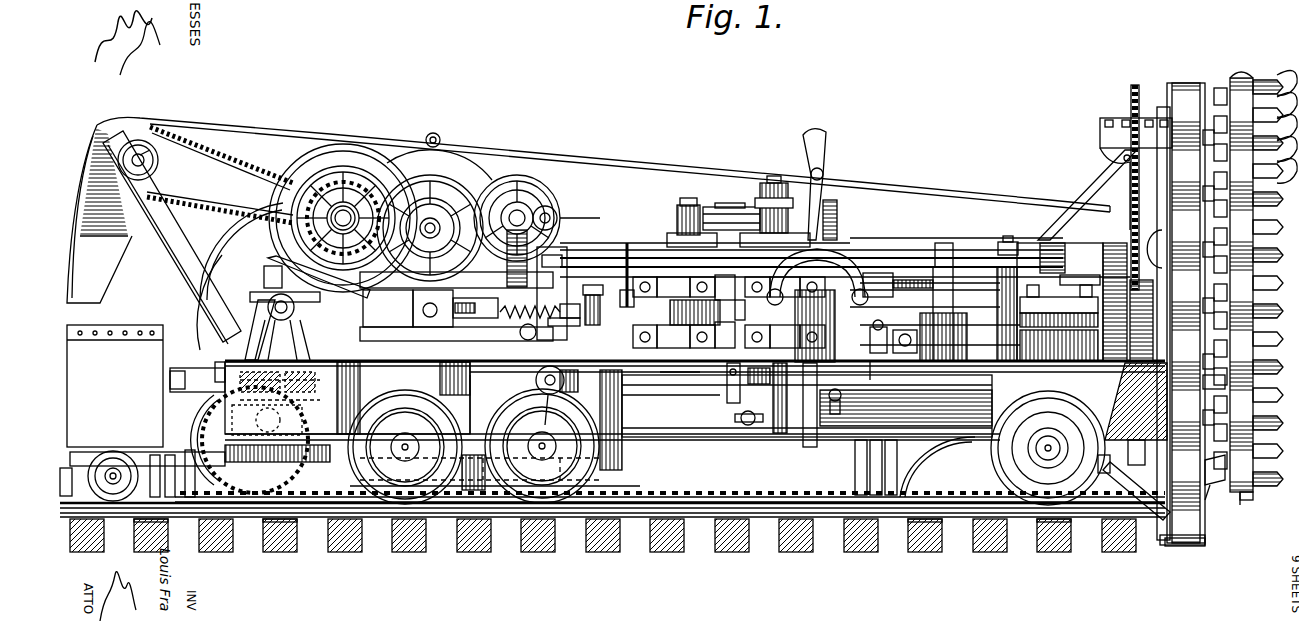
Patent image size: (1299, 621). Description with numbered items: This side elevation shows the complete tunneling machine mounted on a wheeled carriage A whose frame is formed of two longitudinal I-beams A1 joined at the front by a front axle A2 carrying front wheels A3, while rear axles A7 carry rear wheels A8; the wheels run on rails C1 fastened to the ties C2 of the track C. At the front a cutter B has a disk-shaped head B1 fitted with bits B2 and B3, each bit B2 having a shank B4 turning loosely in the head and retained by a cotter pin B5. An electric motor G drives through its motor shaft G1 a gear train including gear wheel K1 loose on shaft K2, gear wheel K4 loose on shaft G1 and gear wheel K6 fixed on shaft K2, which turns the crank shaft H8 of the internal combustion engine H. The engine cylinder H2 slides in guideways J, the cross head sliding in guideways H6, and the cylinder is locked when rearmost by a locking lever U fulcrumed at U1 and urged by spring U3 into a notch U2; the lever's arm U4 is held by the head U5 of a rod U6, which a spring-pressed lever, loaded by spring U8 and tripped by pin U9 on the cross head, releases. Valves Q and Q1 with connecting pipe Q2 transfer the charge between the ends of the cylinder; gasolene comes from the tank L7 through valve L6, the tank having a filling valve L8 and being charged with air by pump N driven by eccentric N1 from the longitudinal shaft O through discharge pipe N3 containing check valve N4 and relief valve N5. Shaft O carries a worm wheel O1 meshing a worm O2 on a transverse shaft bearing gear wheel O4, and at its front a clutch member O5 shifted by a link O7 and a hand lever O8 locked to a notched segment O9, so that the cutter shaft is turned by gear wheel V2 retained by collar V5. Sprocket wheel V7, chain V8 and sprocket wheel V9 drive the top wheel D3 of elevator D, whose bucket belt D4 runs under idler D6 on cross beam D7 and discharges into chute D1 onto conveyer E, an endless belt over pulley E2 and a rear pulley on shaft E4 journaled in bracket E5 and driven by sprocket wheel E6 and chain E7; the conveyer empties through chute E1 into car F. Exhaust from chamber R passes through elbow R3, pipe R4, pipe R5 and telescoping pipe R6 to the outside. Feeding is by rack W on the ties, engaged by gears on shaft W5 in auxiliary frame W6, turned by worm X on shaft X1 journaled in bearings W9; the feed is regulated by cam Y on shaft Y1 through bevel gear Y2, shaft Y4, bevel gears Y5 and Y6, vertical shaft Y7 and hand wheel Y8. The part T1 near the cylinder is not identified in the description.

The chute E1 is at (99, 214).
The bracket E5 is at (200, 240).
The conveyer E is at (603, 164).
The sprocket chain E7 is at (268, 170).
The sprocket wheel E6 is at (160, 160).
The shaft E4 is at (151, 145).
The pulley E2 is at (1160, 230).
The gear wheel K1 is at (343, 144).
The shaft K2 is at (343, 218).
The gear wheel K6 is at (343, 208).
The gear wheel K4 is at (428, 145).
The motor G is at (455, 152).
The motor shaft G1 is at (437, 230).
The worm O2 is at (540, 208).
The gear wheel O4 is at (560, 214).
The clutch member O5 is at (520, 200).
The worm wheel O1 is at (555, 270).
The shaft O is at (972, 248).
The link O7 is at (912, 270).
The hand lever O8 is at (825, 150).
The notched segment O9 is at (840, 268).
The crank shaft H8 is at (272, 300).
The internal combustion engine H is at (731, 207).
The cylinder H2 is at (668, 243).
The guideways H6 is at (456, 313).
The worm X is at (263, 330).
The shaft X1 is at (200, 379).
The locking lever U is at (680, 388).
The fulcrum U1 is at (1060, 302).
The notch U2 is at (527, 329).
The spring U3 is at (550, 325).
The arm U4 is at (729, 300).
The head U5 is at (729, 335).
The rod U6 is at (594, 305).
The spring U8 is at (747, 323).
The pin U9 is at (455, 307).
The wheeled carriage A is at (695, 418).
The I-beams A1 is at (210, 400).
The front axle A2 is at (1048, 455).
The front wheels A3 is at (1060, 410).
The rear axles A7 is at (405, 447).
The rear wheels A8 is at (495, 486).
The rack W is at (215, 470).
The shaft W5 is at (280, 420).
The auxiliary frame W6 is at (277, 460).
The bearings W9 is at (210, 367).
The car F is at (115, 386).
The exhaust chamber R is at (205, 462).
The elbow R3 is at (64, 482).
The pipe R4 is at (950, 480).
The pipe R5 is at (785, 480).
The pipe R6 is at (172, 473).
The cam Y is at (596, 420).
The shaft Y1 is at (542, 380).
The bevel gear wheel Y2 is at (544, 413).
The shaft Y4 is at (671, 399).
The bevel gear wheel Y5 is at (721, 386).
The bevel gear wheel Y6 is at (781, 405).
The shaft Y7 is at (845, 275).
The hand wheel Y8 is at (785, 230).
The valve L6 is at (750, 428).
The tank L7 is at (807, 406).
The filling valve L8 is at (845, 395).
The rod T1 is at (625, 265).
The valve Q is at (688, 205).
The valve Q1 is at (776, 185).
The pipe Q2 is at (735, 197).
The guideways J is at (878, 273).
The air pump N is at (965, 320).
The eccentric N1 is at (942, 240).
The discharge pipe N3 is at (880, 375).
The check valve N4 is at (861, 336).
The relief valve N5 is at (900, 320).
The gear wheel V2 is at (1100, 348).
The collar V5 is at (1012, 236).
The sprocket wheel V7 is at (1144, 320).
The sprocket chain V8 is at (1113, 189).
The sprocket wheel V9 is at (1140, 100).
The elevator D is at (1185, 88).
The chute D1 is at (1090, 190).
The top wheel D3 is at (1215, 267).
The bucket belt D4 is at (1165, 420).
The idler D6 is at (1205, 542).
The cross beam D7 is at (1134, 480).
The cutter B is at (1241, 270).
The head B1 is at (1247, 507).
The bits B2 is at (1269, 412).
The bits B3 is at (1262, 75).
The shank B4 is at (1218, 486).
The cotter pin B5 is at (1211, 383).
The track C is at (612, 537).
The rails C1 is at (176, 522).
The ties C2 is at (290, 535).